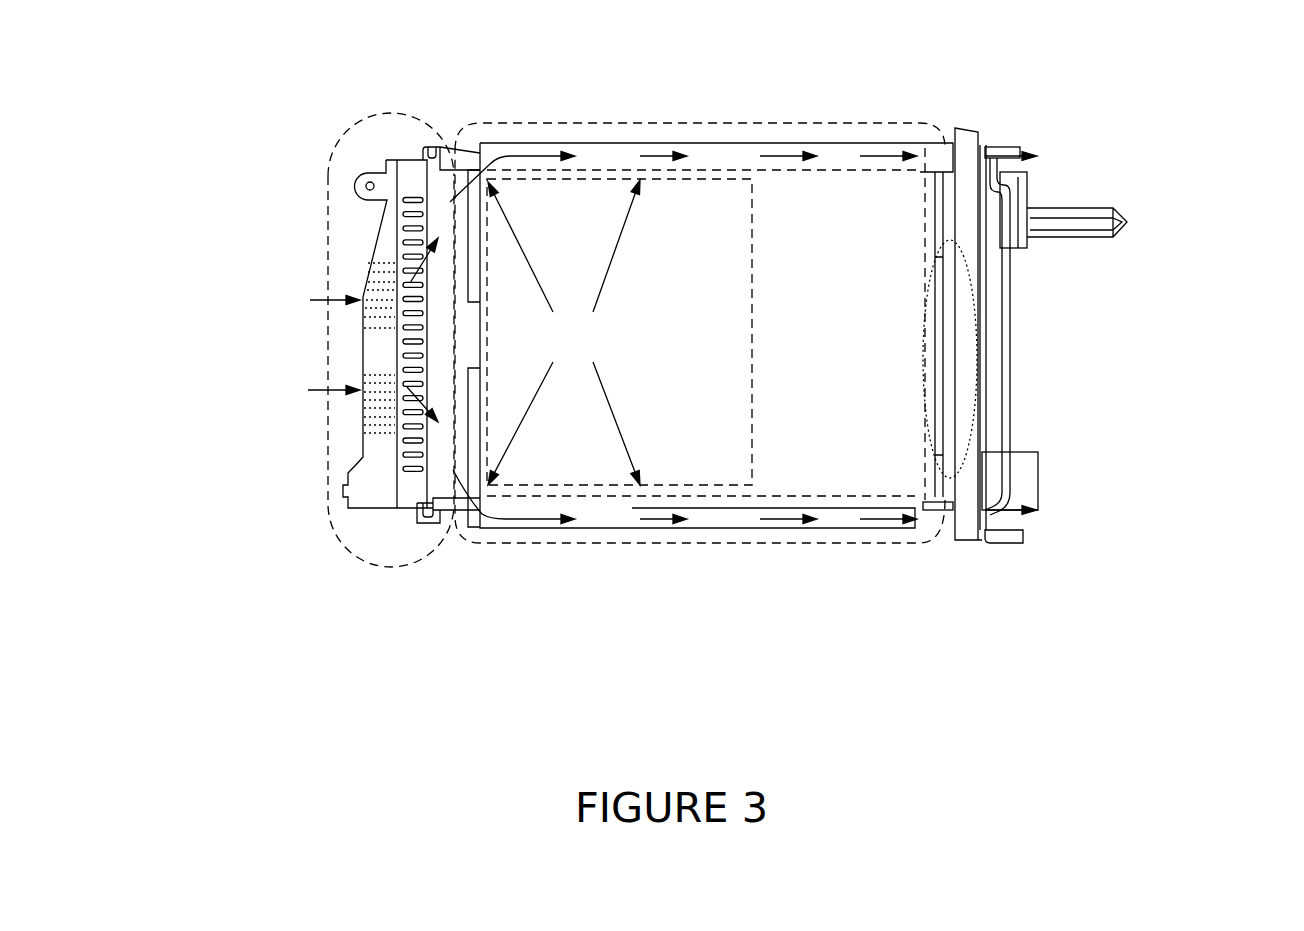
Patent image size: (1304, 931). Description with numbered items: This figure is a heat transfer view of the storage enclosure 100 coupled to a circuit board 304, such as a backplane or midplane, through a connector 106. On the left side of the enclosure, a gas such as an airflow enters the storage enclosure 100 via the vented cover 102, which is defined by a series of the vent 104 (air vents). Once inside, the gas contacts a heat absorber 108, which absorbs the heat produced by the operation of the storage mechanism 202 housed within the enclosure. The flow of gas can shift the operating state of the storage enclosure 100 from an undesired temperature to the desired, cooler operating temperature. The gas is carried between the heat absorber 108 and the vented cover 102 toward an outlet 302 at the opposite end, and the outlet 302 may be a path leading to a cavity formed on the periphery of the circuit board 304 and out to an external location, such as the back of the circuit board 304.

The storage enclosure 100 is at (895, 612).
The vented cover 102 is at (366, 406).
The vent 104 is at (327, 382).
The connector 106 is at (963, 275).
The heat absorber 108 is at (477, 508).
The storage mechanism 202 is at (522, 197).
The outlet 302 is at (1062, 157).
The circuit board 304 is at (998, 158).